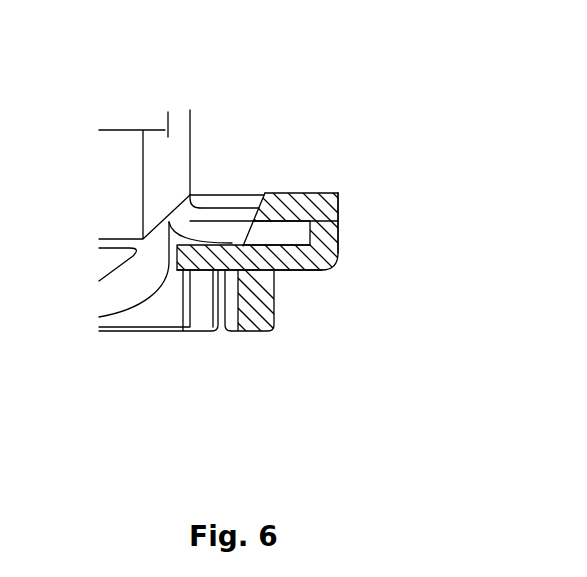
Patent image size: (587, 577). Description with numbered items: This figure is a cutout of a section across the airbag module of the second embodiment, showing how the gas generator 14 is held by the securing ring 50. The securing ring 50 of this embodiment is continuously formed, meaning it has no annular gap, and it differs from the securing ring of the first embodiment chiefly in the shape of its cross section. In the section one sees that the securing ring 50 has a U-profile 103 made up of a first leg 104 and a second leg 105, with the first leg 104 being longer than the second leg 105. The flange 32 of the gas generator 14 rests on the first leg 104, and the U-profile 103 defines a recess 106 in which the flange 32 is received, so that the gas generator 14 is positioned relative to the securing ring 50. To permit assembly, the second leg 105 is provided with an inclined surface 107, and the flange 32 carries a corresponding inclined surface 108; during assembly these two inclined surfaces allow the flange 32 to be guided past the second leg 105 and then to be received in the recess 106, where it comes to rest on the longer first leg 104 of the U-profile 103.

The gas generator 14 is at (173, 146).
The inclined surface 107 is at (244, 195).
The flange 32 is at (210, 240).
The second leg 105 is at (287, 193).
The securing ring 50 is at (295, 208).
The recess 106 is at (340, 218).
The U-profile 103 is at (298, 233).
The first leg 104 is at (282, 259).
The inclined surface 108 is at (270, 272).